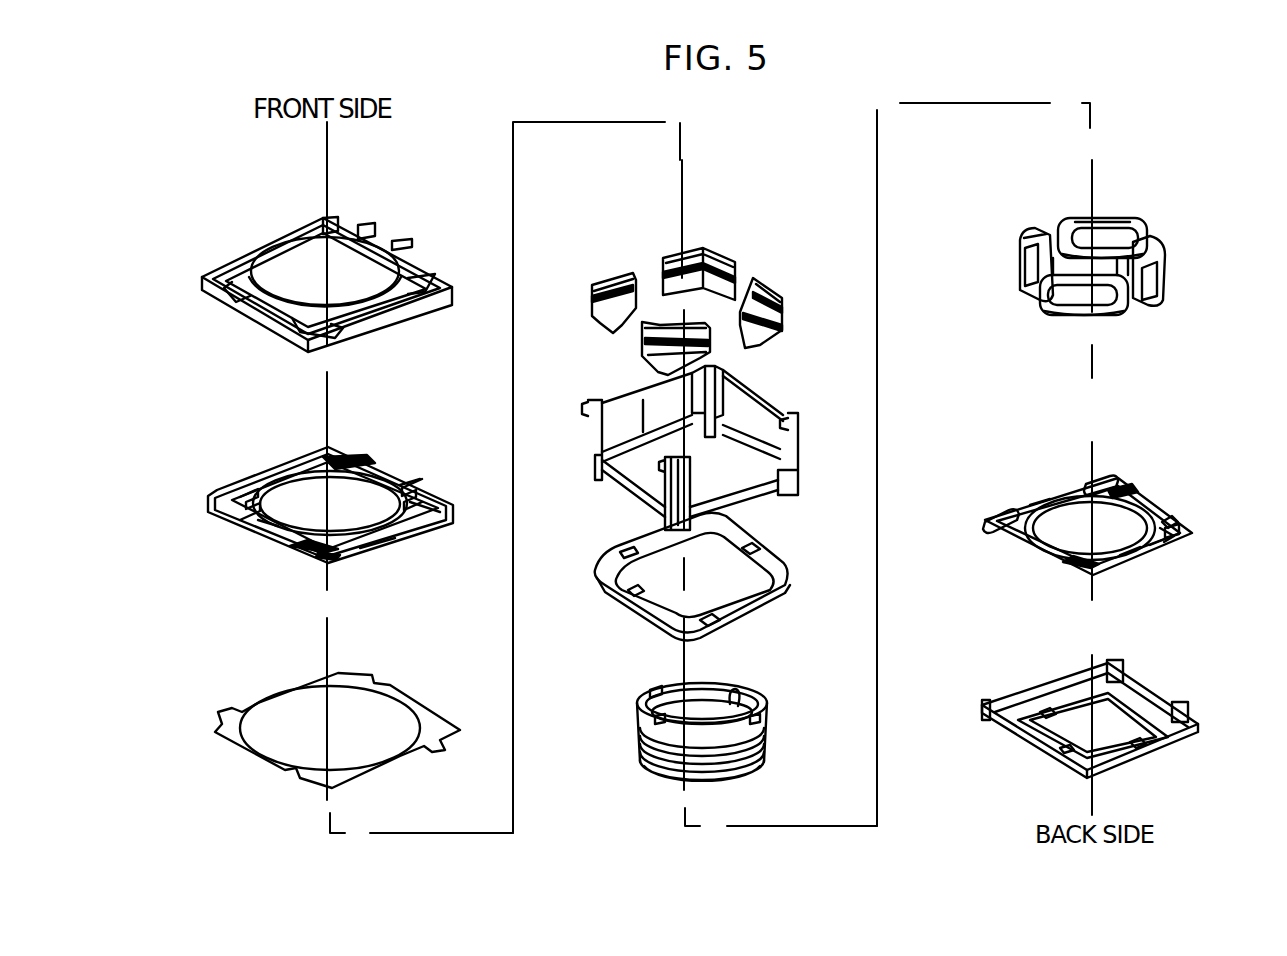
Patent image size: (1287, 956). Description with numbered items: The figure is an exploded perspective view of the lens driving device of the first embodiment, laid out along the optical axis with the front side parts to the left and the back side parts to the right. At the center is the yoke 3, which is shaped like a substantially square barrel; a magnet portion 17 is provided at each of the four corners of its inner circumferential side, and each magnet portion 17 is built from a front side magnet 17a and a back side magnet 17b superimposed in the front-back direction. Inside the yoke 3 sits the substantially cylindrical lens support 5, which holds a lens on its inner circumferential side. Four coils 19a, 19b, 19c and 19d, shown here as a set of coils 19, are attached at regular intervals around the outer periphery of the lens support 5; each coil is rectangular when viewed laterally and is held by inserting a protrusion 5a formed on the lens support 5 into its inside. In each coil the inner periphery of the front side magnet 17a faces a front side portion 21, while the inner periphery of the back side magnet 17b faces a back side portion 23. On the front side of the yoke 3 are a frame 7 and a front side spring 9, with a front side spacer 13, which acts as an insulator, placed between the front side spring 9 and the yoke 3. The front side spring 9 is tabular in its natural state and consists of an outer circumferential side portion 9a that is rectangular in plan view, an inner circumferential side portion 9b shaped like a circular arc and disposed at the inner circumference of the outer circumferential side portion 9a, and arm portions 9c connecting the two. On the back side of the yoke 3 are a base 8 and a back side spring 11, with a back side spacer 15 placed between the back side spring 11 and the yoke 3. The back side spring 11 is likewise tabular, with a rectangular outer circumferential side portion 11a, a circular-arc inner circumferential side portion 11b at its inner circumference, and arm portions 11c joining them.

The yoke 3 is at (628, 490).
The lens support 5 is at (660, 776).
The protrusion 5a is at (738, 704).
The frame 7 is at (250, 324).
The base 8 is at (1040, 755).
The front side spring 9 is at (240, 553).
The outer circumferential side portion 9a is at (345, 550).
The inner circumferential side portion 9b is at (390, 543).
The arm portion 9c is at (440, 518).
The back side spring 11 is at (1030, 568).
The outer circumferential side portion 11a is at (1182, 543).
The inner circumferential side portion 11b is at (1148, 555).
The arm portion 11c is at (1170, 526).
The front side spacer 13 is at (252, 757).
The back side spacer 15 is at (620, 588).
The magnet portion 17 is at (734, 311).
The front side magnet 17a is at (770, 288).
The back side magnet 17b is at (774, 320).
The yoke ring 19 is at (1098, 252).
The coil 19a is at (1122, 228).
The coil 19b is at (1026, 270).
The coil 19c is at (1080, 318).
The coil 19d is at (1158, 300).
The front side portion 21 is at (1083, 220).
The back side portion 23 is at (1122, 305).